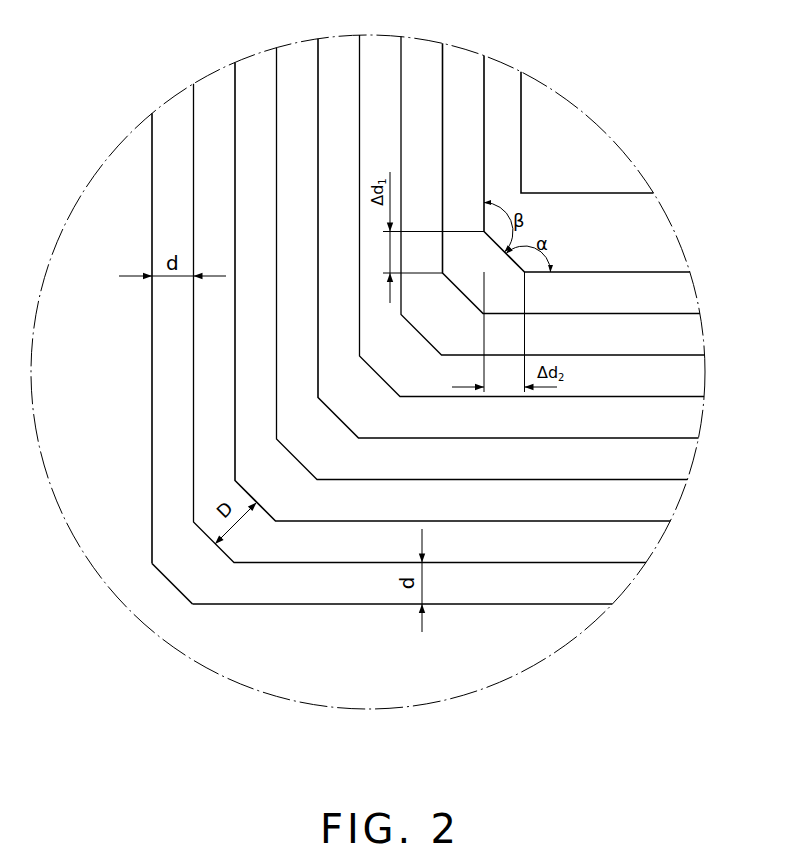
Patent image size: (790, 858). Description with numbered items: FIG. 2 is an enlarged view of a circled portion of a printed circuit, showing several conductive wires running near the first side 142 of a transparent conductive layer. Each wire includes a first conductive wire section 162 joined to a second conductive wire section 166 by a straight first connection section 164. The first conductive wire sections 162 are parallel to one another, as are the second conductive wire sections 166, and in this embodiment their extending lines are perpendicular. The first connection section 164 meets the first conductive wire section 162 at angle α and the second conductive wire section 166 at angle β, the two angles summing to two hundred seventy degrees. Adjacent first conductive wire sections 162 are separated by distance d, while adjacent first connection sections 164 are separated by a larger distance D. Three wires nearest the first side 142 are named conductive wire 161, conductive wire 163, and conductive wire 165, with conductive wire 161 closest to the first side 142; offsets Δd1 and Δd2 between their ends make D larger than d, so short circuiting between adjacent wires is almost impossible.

The first side 142 is at (521, 130).
The conductive wire 161 is at (598, 271).
The conductive wire 163 is at (642, 314).
The conductive wire 165 is at (642, 355).
The first conductive wire section 162 is at (152, 513).
The first connection section 164 is at (172, 584).
The second conductive wire section 166 is at (248, 604).